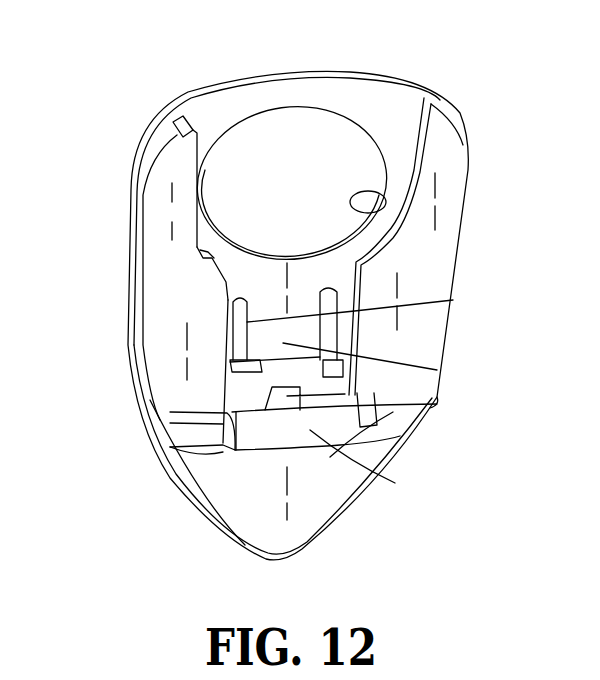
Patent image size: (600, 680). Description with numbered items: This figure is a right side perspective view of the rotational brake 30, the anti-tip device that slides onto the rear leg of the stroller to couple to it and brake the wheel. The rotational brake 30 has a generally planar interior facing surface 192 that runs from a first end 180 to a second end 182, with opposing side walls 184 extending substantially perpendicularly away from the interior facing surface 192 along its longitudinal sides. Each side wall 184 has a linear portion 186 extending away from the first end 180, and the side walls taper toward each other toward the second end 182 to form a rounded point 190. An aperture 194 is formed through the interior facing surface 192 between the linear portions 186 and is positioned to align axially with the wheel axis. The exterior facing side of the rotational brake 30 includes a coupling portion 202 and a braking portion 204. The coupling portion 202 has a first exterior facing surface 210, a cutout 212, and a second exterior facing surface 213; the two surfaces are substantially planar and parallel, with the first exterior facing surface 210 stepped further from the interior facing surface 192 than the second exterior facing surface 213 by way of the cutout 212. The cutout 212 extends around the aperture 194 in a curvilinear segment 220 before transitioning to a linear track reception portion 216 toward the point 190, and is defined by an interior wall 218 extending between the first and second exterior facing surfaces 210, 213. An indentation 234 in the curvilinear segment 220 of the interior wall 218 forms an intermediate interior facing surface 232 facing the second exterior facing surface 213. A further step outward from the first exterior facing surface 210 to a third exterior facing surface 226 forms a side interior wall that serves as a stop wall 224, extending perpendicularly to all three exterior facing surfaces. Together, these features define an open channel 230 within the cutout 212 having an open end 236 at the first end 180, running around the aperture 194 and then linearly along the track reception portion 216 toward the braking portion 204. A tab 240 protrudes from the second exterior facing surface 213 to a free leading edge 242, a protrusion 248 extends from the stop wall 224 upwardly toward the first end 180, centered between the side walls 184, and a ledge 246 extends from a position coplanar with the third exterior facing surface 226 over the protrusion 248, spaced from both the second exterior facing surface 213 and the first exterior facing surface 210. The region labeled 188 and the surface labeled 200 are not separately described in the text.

The rotational brake 30 is at (140, 47).
The first end 180 is at (344, 72).
The second end 182 is at (313, 549).
The side walls 184 is at (128, 297).
The linear portion 186 is at (128, 263).
The lower left wall 188 is at (182, 503).
The rounded point 190 is at (275, 562).
The interior facing surface 192 is at (233, 83).
The aperture 194 is at (353, 212).
The rear panel 200 is at (410, 328).
The coupling portion 202 is at (213, 293).
The braking portion 204 is at (240, 507).
The first exterior facing surface 210 is at (440, 182).
The cutout 212 is at (413, 140).
The second exterior facing surface 213 is at (247, 110).
The track reception portion 216 is at (447, 297).
The interior wall 218 is at (160, 349).
The curvilinear segment 220 is at (207, 257).
The stop wall 224 is at (393, 412).
The third exterior facing surface 226 is at (330, 497).
The open channel 230 is at (374, 92).
The intermediate interior facing surface 232 is at (182, 118).
The indentation 234 is at (427, 104).
The open end 236 is at (303, 88).
The tab 240 is at (437, 370).
The leading edge 242 is at (320, 355).
The ledge 246 is at (395, 483).
The protrusion 248 is at (432, 404).